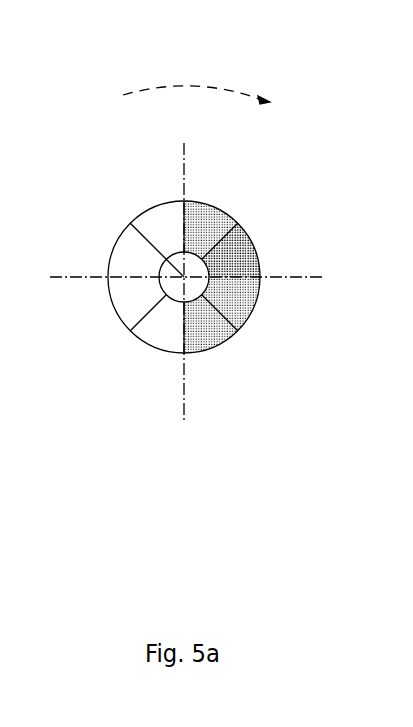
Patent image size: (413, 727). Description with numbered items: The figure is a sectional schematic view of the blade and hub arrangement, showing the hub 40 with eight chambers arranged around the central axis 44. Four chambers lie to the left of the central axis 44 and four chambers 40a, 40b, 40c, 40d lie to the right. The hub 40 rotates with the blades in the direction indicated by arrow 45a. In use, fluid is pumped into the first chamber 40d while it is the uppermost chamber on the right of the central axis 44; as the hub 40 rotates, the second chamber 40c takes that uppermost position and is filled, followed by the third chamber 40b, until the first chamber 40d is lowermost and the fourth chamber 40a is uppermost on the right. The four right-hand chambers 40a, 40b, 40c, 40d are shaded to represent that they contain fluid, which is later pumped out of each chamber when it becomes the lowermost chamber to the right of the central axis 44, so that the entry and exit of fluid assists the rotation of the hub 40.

The hub 40 is at (77, 355).
The fourth chamber 40a is at (222, 215).
The third chamber 40b is at (240, 243).
The second chamber 40c is at (240, 301).
The first chamber 40d is at (215, 333).
The central axis 44 is at (183, 275).
The arrow indicating direction of rotation 45a is at (205, 83).